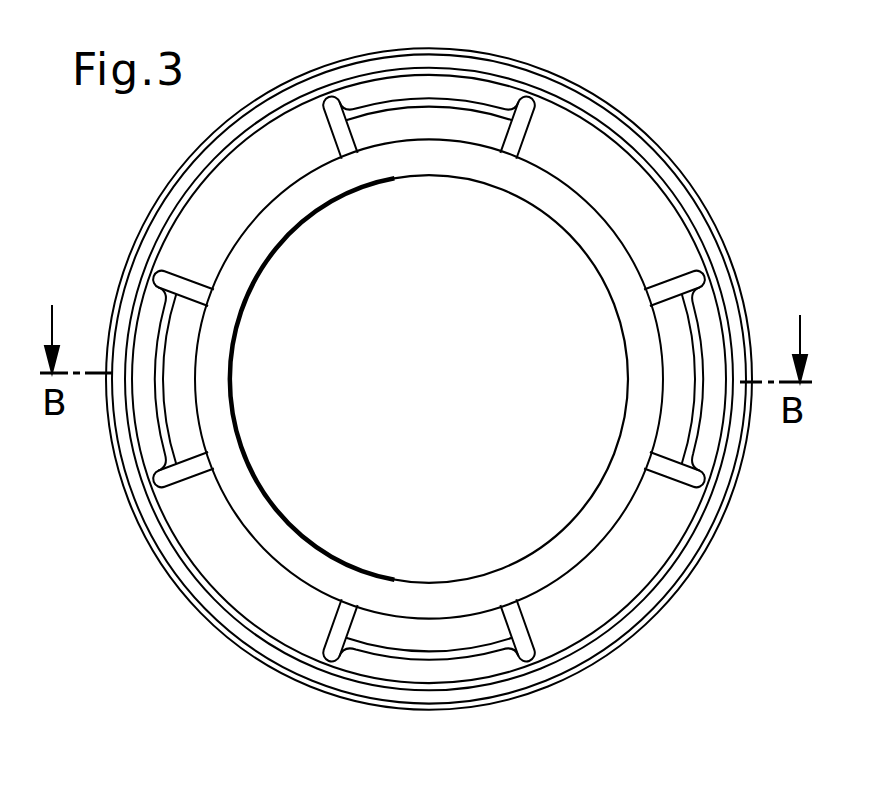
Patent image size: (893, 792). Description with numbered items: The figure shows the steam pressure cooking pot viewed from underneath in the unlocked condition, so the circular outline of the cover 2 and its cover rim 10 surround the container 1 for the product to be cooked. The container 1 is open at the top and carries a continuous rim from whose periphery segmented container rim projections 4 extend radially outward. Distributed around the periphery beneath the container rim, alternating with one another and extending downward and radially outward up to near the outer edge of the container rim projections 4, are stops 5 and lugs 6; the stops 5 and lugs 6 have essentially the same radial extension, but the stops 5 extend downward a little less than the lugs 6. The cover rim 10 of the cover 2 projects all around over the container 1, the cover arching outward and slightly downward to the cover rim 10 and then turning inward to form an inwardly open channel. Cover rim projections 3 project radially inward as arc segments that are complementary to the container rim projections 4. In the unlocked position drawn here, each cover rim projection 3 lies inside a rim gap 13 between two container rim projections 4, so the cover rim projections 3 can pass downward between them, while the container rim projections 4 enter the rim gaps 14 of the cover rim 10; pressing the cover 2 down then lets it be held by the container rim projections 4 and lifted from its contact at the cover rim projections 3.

The container 1 is at (520, 257).
The cover 2 is at (702, 227).
The cover rim projections 3 is at (708, 333).
The container rim projections 4 is at (638, 558).
The stops 5 is at (525, 628).
The lugs 6 is at (318, 644).
The cover rim 10 is at (117, 477).
The rim gap 13 is at (700, 437).
The rim gaps 14 is at (690, 536).